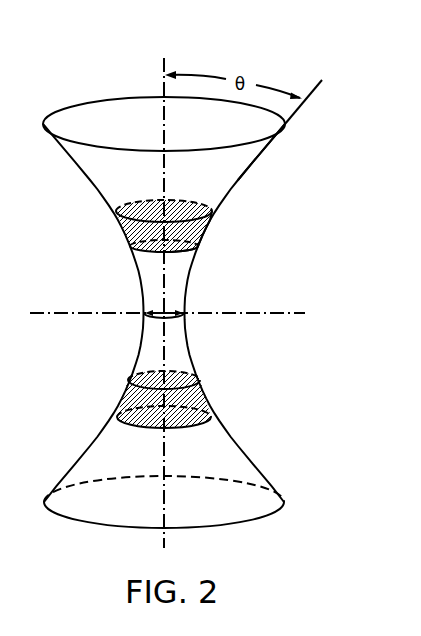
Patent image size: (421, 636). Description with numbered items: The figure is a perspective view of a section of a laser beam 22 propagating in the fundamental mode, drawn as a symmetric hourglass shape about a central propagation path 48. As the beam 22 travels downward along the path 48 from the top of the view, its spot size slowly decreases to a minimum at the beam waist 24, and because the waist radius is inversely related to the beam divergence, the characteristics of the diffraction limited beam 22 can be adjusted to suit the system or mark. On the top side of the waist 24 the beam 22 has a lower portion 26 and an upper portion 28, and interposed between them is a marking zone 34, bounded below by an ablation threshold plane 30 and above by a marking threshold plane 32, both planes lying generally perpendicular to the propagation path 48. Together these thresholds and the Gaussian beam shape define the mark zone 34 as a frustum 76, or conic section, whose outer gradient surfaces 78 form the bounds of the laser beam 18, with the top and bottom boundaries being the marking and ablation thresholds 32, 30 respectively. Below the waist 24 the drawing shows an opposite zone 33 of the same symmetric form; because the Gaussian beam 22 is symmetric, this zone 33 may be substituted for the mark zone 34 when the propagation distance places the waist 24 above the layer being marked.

The laser beam 18 is at (302, 385).
The laser beam 22 is at (268, 146).
The beam waist 24 is at (185, 315).
The lower portion 26 is at (180, 292).
The upper portion 28 is at (189, 239).
The ablation threshold plane 30 is at (142, 255).
The marking threshold plane 32 is at (128, 230).
The opposite zone 33 is at (198, 394).
The marking zone 34 is at (203, 235).
The propagation path 48 is at (168, 456).
The frustum 76 is at (195, 250).
The outer gradient surfaces 78 is at (223, 170).